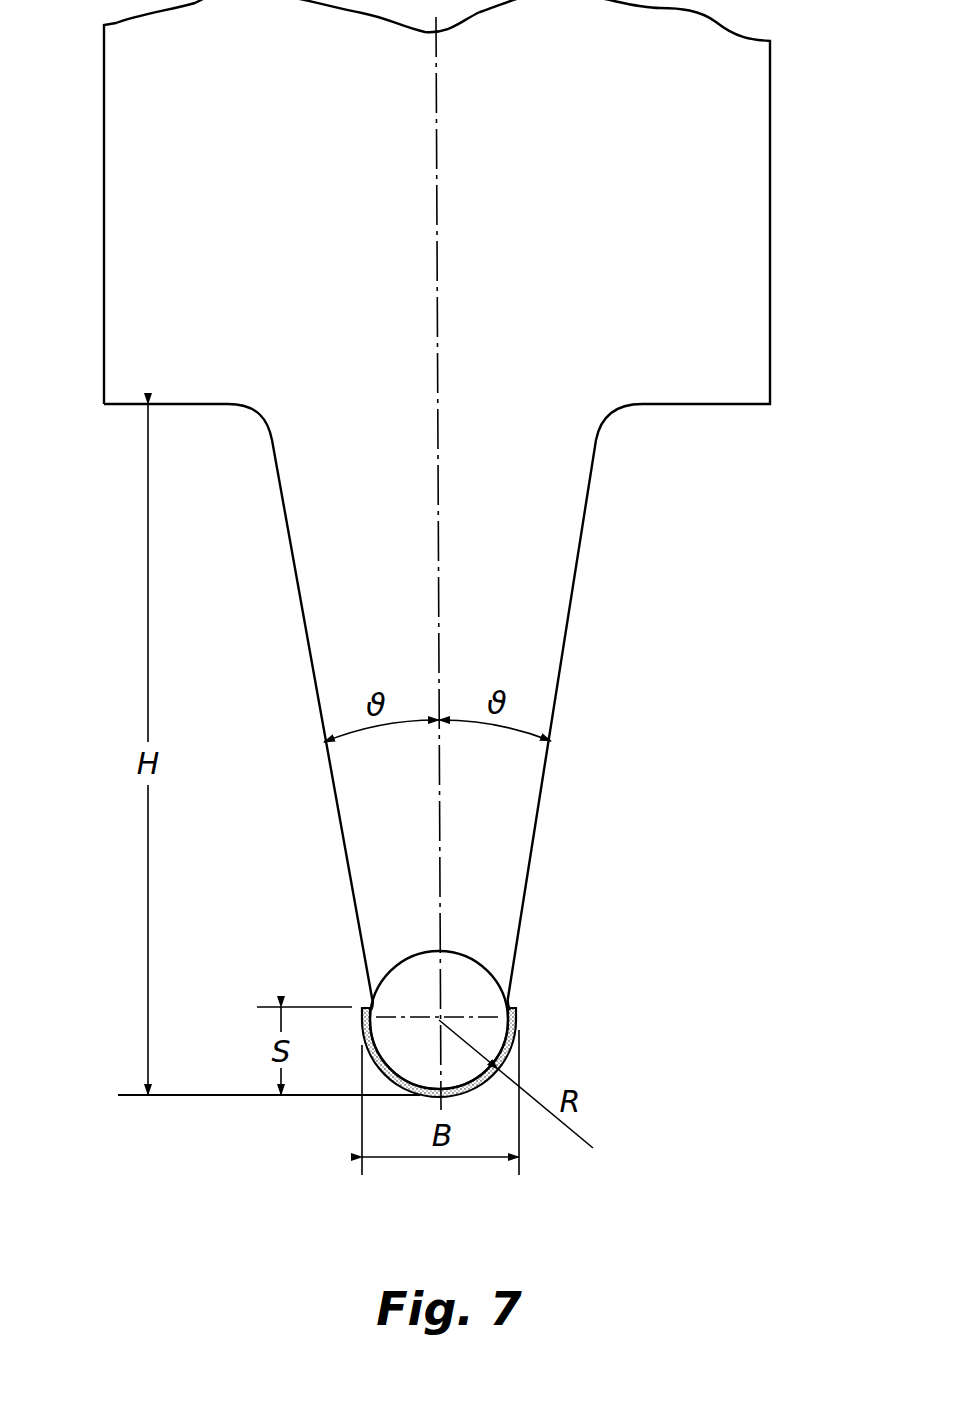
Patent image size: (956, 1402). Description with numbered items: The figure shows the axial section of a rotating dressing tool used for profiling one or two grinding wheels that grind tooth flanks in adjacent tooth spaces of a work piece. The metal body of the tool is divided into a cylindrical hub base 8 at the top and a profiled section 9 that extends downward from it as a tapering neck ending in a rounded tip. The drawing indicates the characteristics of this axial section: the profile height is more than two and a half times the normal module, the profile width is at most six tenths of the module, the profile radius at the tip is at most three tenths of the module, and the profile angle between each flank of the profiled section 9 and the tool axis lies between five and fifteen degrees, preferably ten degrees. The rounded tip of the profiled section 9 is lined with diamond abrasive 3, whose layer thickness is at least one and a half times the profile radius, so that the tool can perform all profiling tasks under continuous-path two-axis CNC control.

The cylindrical hub base 8 is at (745, 231).
The profiled section 9 is at (514, 851).
The diamond abrasive 3 is at (518, 1022).